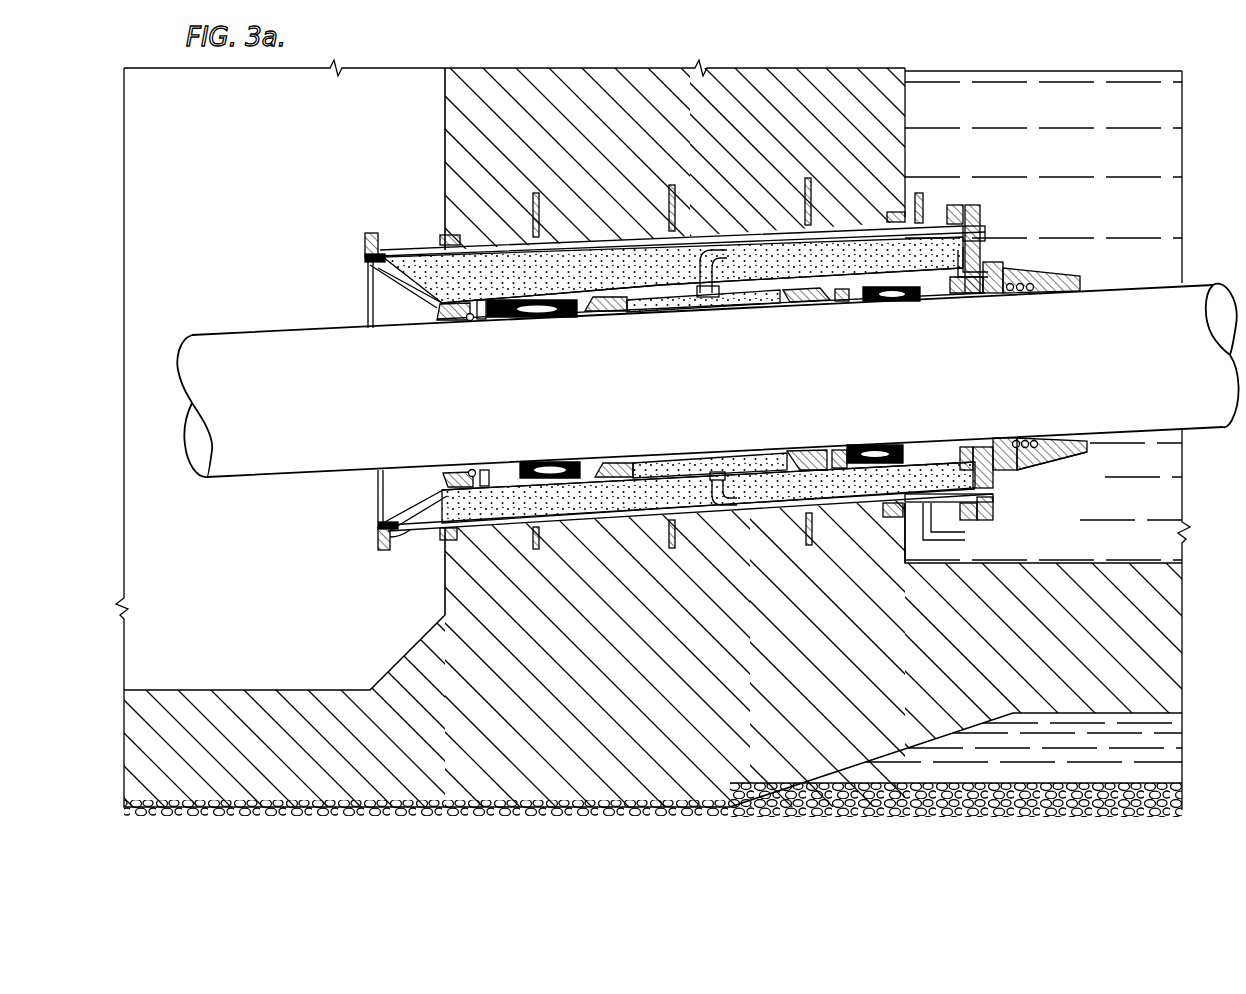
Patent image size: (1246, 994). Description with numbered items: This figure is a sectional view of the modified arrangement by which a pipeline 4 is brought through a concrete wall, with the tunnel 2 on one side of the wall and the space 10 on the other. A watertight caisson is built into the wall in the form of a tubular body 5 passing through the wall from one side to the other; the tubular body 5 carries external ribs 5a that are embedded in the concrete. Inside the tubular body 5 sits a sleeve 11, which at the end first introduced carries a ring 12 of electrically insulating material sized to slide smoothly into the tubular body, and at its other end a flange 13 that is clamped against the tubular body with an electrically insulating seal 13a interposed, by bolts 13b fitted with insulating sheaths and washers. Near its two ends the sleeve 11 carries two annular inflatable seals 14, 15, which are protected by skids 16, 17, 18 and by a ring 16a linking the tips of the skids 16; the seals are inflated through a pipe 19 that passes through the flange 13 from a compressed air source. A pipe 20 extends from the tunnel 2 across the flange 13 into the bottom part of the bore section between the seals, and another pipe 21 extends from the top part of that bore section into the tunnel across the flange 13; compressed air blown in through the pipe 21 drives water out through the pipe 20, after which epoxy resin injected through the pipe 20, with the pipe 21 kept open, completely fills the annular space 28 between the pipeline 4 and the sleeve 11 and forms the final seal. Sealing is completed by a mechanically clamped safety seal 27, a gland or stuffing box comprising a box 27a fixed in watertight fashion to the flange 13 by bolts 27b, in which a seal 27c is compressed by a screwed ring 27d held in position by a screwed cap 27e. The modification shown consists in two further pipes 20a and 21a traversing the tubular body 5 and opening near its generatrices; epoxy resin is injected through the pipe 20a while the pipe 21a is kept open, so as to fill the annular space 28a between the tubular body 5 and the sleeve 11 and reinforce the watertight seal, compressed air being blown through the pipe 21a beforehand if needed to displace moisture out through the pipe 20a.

The tunnel 2 is at (956, 425).
The pipeline 4 is at (208, 337).
The tubular body 5 is at (622, 512).
The ribs 5a is at (822, 198).
The interior space 10 is at (236, 253).
The sleeve 11 is at (604, 470).
The ring 12 is at (364, 258).
The flange 13 is at (988, 521).
The electrically insulating seal 13a is at (993, 508).
The bolts 13b is at (995, 516).
The annular inflatable seal 14 is at (542, 463).
The annular inflatable seal 15 is at (888, 445).
The skid 16 is at (447, 322).
The ring 16a is at (472, 321).
The skid 17 is at (609, 312).
The skid 18 is at (812, 302).
The pipe 19 is at (664, 288).
The pipe 20 is at (775, 502).
The pipe 20a is at (950, 541).
The pipe 21 is at (754, 248).
The pipe 21a is at (920, 200).
The safety seal 27 is at (1051, 275).
The box 27a is at (1020, 267).
The bolts 27b is at (1010, 468).
The seal 27c is at (1016, 438).
The screwed ring 27d is at (1052, 445).
The screwed cap 27e is at (1085, 452).
The annular space 28 is at (748, 306).
The annular space 28a is at (508, 268).